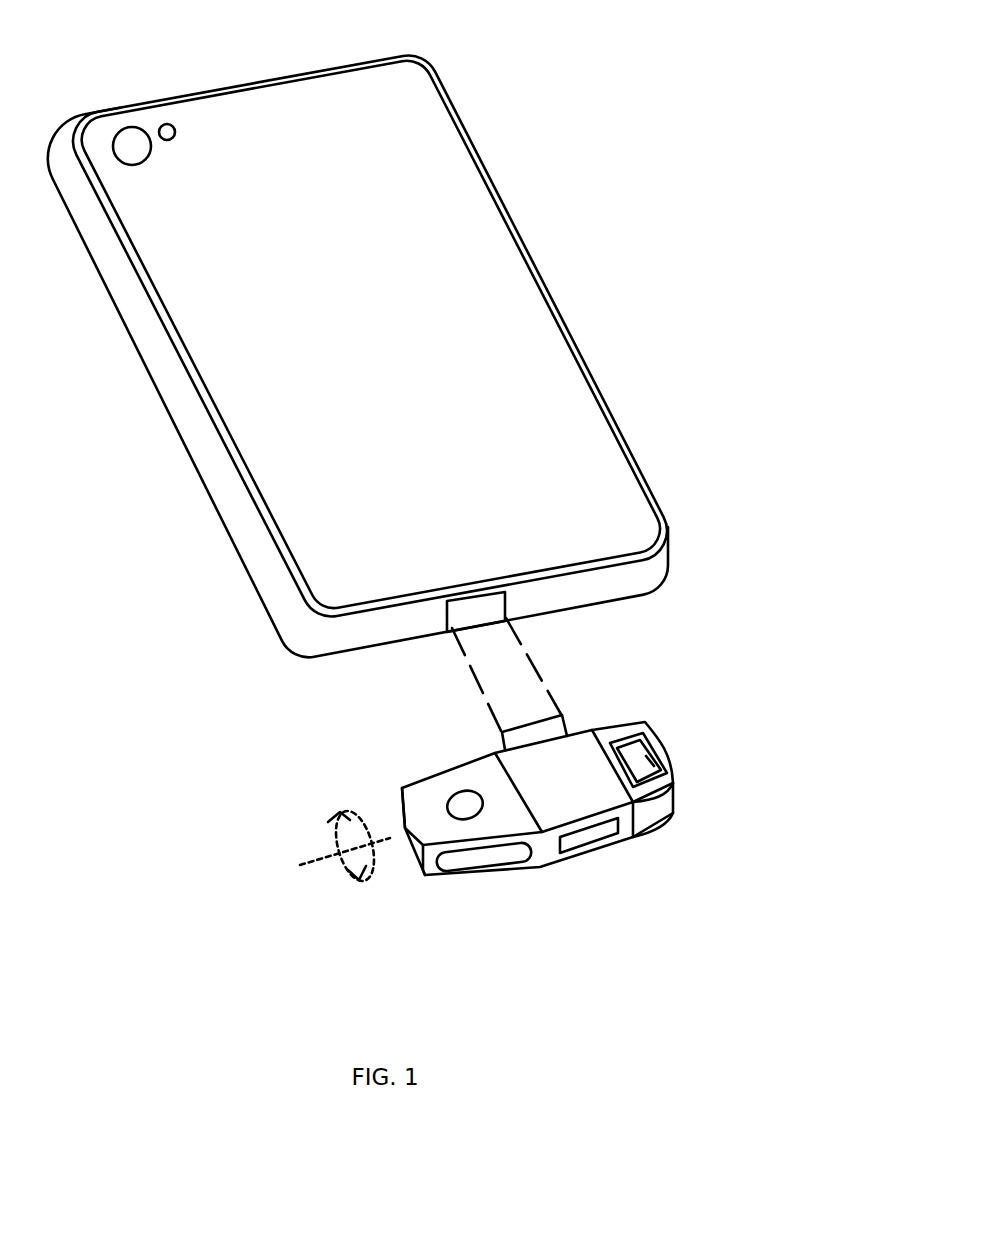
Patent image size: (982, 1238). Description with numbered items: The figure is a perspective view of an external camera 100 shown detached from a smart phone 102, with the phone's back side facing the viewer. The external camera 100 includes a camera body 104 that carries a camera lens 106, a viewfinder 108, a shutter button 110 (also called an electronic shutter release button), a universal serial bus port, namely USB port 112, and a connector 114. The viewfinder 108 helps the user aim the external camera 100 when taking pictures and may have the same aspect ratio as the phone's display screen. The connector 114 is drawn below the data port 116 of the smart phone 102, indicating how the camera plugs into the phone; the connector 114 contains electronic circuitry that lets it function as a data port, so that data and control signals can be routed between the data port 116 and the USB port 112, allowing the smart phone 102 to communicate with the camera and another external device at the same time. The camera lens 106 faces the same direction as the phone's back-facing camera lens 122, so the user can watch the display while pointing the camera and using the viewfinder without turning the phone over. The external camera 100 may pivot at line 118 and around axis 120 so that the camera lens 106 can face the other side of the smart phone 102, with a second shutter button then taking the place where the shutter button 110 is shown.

The external camera 100 is at (545, 832).
The smart phone 102 is at (358, 343).
The camera body 104 is at (518, 755).
The camera lens 106 is at (447, 820).
The viewfinder 108 is at (674, 773).
The shutter button 110 is at (498, 858).
The USB port 112 is at (585, 840).
The connector 114 is at (567, 724).
The data port 116 is at (506, 605).
The line 118 is at (550, 858).
The axis 120 is at (308, 860).
The back-facing camera lens 122 is at (133, 127).